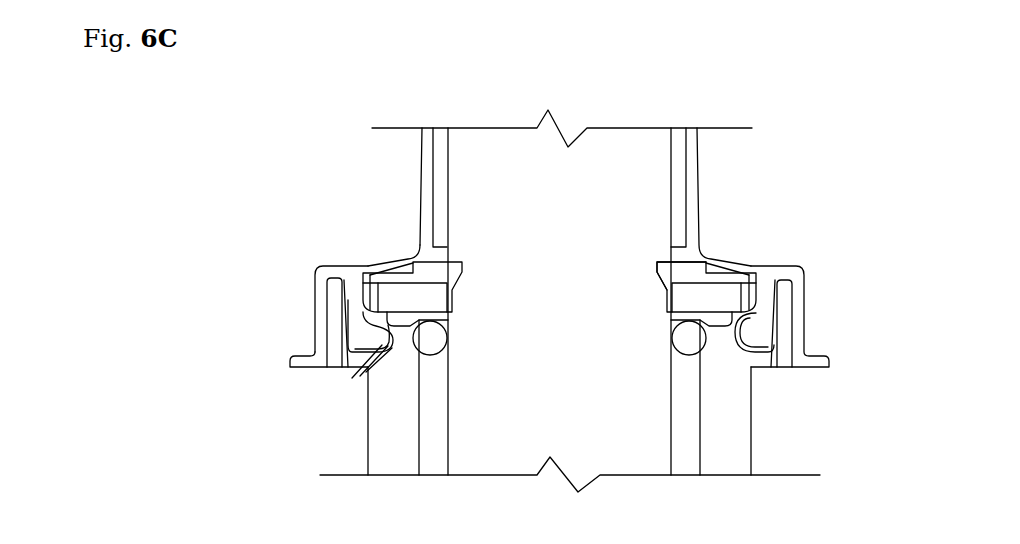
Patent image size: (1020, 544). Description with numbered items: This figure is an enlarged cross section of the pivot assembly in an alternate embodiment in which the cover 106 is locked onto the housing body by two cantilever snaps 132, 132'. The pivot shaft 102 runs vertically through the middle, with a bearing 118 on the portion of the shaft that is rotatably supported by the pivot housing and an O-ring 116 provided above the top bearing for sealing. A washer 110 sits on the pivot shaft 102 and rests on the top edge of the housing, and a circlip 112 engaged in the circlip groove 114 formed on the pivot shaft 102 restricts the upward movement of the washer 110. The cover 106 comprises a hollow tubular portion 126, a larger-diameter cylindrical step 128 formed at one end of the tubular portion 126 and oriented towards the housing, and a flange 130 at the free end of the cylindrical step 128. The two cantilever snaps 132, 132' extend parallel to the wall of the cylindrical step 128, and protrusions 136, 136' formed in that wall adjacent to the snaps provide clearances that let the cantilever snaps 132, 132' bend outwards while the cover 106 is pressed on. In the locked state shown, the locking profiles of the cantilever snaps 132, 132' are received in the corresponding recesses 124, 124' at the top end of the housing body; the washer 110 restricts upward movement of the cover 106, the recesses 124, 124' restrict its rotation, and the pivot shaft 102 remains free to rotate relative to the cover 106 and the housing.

The pivot shaft 102 is at (502, 167).
The cover 106 is at (421, 162).
The washer 110 is at (728, 280).
The circlip 112 is at (688, 273).
The circlip groove 114 is at (432, 268).
The O-ring 116 is at (440, 349).
The bearing 118 is at (432, 445).
The recess 124 is at (759, 368).
The recess 124' is at (325, 382).
The tubular portion 126 is at (432, 205).
The cylindrical step 128 is at (312, 305).
The flange 130 is at (298, 364).
The cantilever snap 132 is at (824, 332).
The cantilever snap 132' is at (293, 326).
The protrusion 136 is at (822, 306).
The protrusion 136' is at (280, 273).